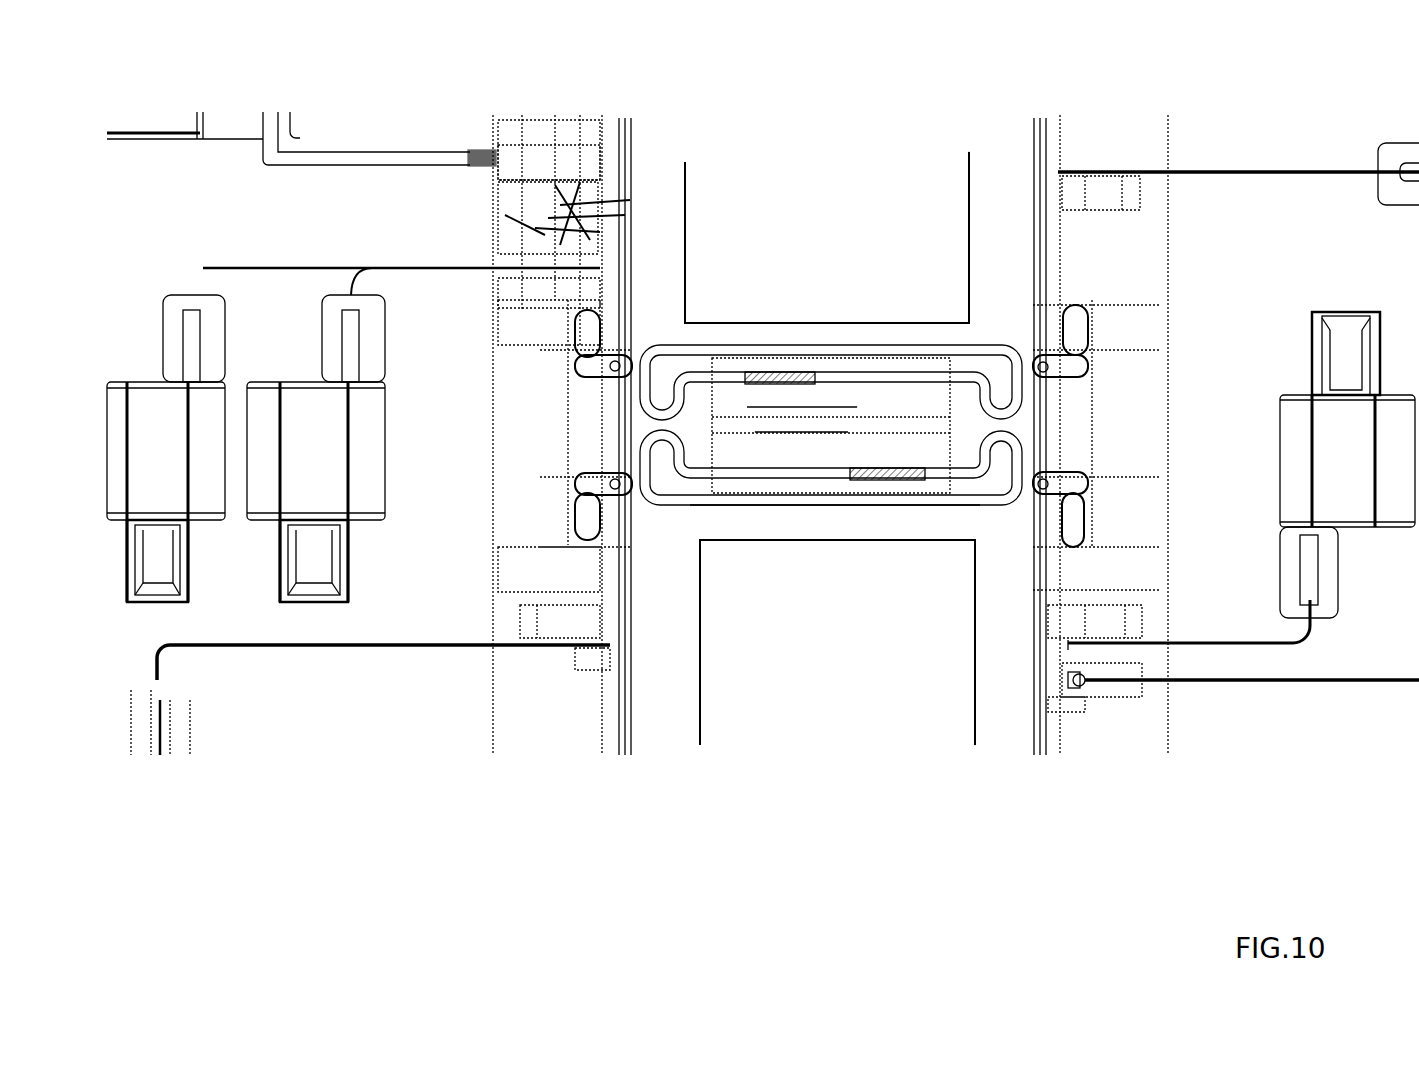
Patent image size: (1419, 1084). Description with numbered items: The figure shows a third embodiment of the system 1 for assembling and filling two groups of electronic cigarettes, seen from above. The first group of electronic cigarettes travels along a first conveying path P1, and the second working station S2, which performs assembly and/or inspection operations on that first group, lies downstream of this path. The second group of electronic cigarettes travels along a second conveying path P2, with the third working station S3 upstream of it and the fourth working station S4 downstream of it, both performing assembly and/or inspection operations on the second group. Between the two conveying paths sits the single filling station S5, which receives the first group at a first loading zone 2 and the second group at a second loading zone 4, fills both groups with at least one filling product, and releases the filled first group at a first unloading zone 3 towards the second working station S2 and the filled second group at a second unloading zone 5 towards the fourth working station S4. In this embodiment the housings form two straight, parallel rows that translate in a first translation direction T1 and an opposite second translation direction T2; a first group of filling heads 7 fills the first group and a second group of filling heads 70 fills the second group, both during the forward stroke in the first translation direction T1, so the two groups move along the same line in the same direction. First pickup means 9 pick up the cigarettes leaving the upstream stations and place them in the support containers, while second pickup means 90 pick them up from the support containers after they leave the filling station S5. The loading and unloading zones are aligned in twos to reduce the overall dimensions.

The system 1 is at (763, 128).
The first loading zone 2 is at (665, 338).
The first unloading zone 3 is at (1015, 338).
The second loading zone 4 is at (664, 488).
The second unloading zone 5 is at (1018, 507).
The first group of filling heads 7 is at (784, 384).
The second group of filling heads 70 is at (893, 483).
The first pickup means 9 is at (572, 356).
The second pickup means 90 is at (1082, 354).
The first conveying path P1 is at (827, 237).
The second conveying path P2 is at (837, 642).
The first translation direction T1 is at (823, 409).
The second translation direction T2 is at (780, 433).
The second working station S2 is at (1078, 212).
The third working station S3 is at (576, 628).
The fourth working station S4 is at (1054, 650).
The filling station S5 is at (760, 493).